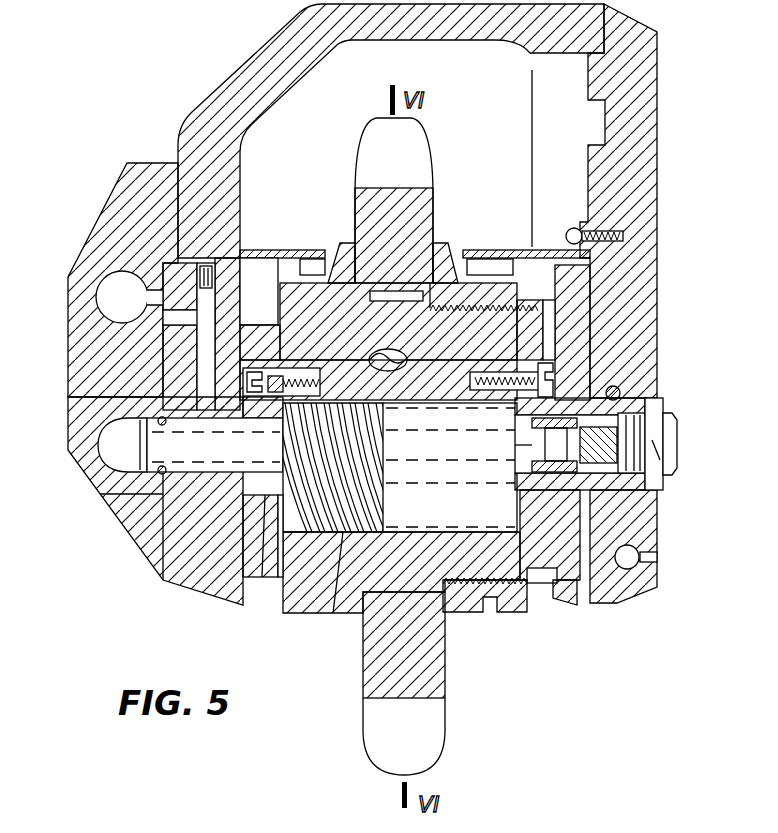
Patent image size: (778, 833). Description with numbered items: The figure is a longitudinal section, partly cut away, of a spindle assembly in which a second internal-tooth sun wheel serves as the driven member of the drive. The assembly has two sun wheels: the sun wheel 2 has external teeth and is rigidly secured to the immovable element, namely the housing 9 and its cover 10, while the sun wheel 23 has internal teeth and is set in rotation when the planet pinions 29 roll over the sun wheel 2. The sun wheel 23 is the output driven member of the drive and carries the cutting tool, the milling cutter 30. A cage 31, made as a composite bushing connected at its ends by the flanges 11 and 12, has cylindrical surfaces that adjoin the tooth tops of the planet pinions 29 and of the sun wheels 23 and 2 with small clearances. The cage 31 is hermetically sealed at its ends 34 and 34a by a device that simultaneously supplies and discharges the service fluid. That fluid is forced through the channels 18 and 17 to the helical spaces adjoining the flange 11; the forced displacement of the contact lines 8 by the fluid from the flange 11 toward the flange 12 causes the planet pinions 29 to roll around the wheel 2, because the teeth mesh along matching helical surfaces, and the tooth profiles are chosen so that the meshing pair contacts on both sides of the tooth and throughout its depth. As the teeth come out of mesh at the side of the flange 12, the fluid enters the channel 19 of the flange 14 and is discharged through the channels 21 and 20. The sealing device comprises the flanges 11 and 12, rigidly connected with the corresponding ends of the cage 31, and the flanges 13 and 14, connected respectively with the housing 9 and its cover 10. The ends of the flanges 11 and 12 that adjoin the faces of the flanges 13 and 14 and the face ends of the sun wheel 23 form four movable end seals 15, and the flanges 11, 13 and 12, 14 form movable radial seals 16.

The housing 9 is at (206, 118).
The cover 10 is at (650, 200).
The channel 18 is at (110, 292).
The channel 17 is at (205, 380).
The end of the cage 34 is at (205, 345).
The flange 13 is at (78, 416).
The channel 20 is at (113, 452).
The cage 31 is at (433, 345).
The movable end seals 15 is at (272, 358).
The end of the cage 34a is at (583, 388).
The sun wheel 2 is at (352, 443).
The contact lines 8 is at (392, 518).
The channel 21 is at (530, 430).
The channel 19 is at (530, 408).
The flange 14 is at (633, 398).
The sun wheel 23 is at (322, 605).
The planet pinions 29 is at (347, 515).
The movable radial seals 16 is at (251, 578).
The flange 11 is at (268, 578).
The flange 12 is at (527, 600).
The milling cutter 30 is at (378, 724).